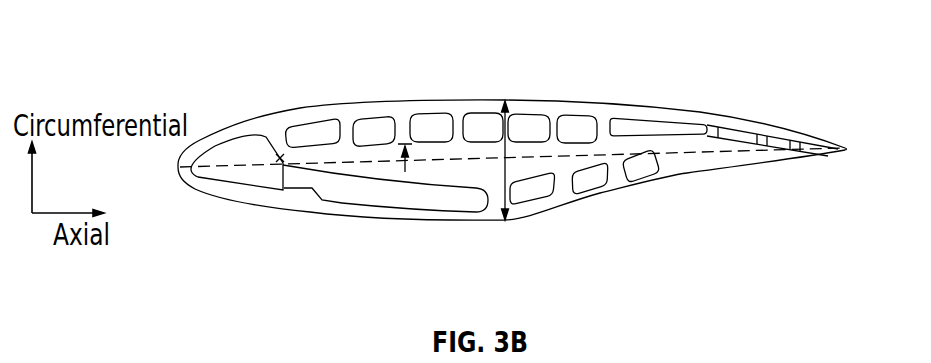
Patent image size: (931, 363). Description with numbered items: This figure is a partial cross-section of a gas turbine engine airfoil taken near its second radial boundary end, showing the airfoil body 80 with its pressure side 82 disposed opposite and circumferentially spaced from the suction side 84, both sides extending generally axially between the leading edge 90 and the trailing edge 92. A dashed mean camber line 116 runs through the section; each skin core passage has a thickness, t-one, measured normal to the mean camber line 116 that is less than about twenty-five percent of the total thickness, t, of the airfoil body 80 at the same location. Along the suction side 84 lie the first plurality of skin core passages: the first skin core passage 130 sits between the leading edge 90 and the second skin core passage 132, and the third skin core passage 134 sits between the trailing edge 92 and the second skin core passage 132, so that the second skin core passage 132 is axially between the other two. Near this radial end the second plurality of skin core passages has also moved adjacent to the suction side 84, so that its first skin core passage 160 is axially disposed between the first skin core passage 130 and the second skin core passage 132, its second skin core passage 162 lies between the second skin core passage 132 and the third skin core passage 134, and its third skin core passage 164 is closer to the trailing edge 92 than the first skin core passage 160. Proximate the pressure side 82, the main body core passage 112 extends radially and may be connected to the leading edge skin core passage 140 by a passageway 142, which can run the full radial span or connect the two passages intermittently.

The airfoil body 80 is at (646, 103).
The pressure side 82 is at (487, 226).
The suction side 84 is at (455, 100).
The leading edge 90 is at (178, 168).
The trailing edge 92 is at (848, 149).
The main body core passage 112 is at (382, 216).
The mean camber line 116 is at (687, 148).
The first skin core passage 130 is at (300, 115).
The second skin core passage 132 is at (427, 108).
The third skin core passage 134 is at (535, 107).
The leading edge skin core passage 140 is at (202, 188).
The passageway 142 is at (295, 190).
The first skin core passage 160 is at (371, 140).
The second skin core passage 162 is at (482, 140).
The third skin core passage 164 is at (577, 140).